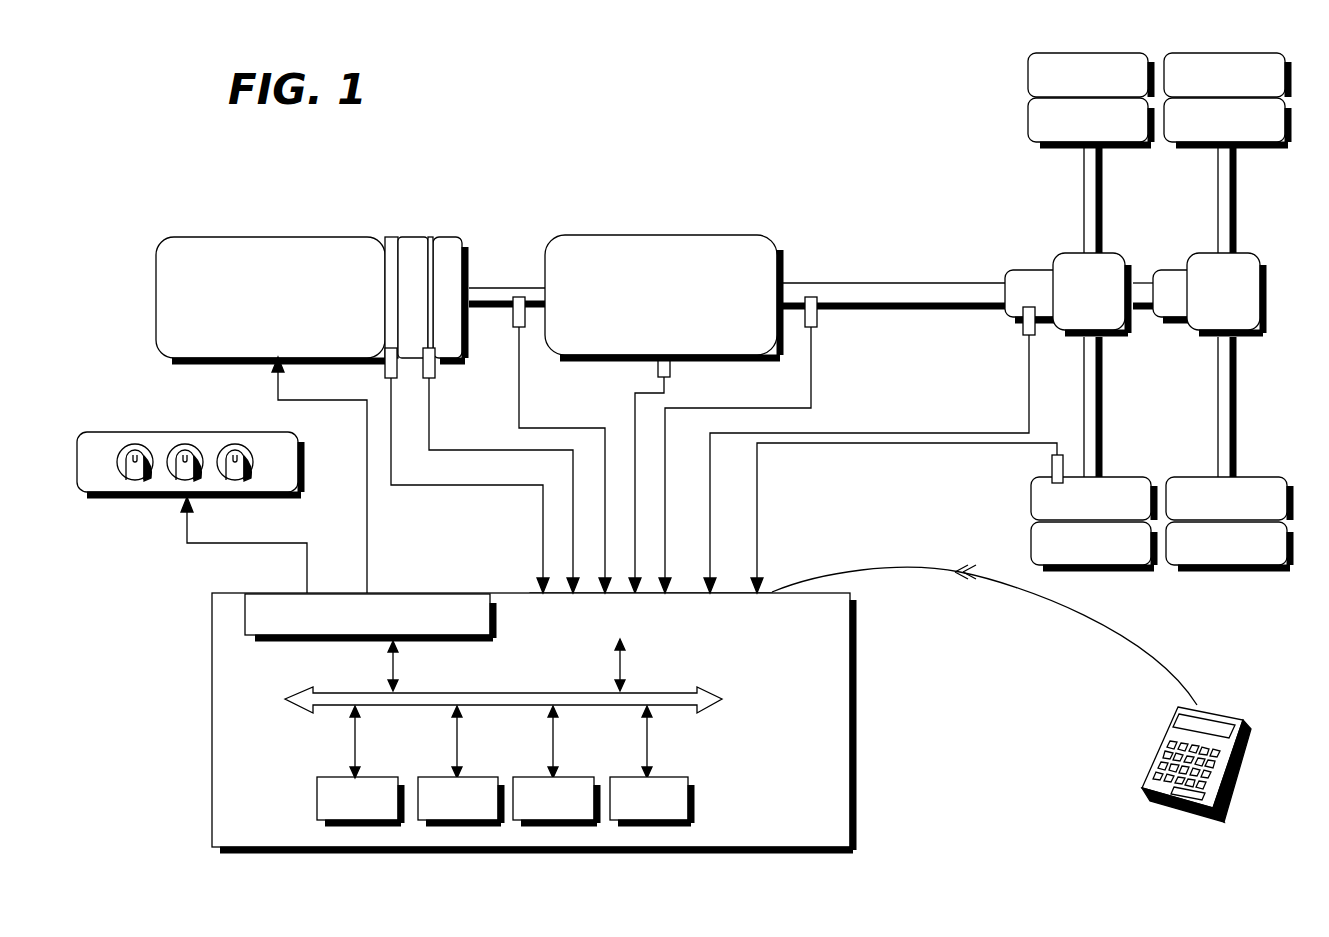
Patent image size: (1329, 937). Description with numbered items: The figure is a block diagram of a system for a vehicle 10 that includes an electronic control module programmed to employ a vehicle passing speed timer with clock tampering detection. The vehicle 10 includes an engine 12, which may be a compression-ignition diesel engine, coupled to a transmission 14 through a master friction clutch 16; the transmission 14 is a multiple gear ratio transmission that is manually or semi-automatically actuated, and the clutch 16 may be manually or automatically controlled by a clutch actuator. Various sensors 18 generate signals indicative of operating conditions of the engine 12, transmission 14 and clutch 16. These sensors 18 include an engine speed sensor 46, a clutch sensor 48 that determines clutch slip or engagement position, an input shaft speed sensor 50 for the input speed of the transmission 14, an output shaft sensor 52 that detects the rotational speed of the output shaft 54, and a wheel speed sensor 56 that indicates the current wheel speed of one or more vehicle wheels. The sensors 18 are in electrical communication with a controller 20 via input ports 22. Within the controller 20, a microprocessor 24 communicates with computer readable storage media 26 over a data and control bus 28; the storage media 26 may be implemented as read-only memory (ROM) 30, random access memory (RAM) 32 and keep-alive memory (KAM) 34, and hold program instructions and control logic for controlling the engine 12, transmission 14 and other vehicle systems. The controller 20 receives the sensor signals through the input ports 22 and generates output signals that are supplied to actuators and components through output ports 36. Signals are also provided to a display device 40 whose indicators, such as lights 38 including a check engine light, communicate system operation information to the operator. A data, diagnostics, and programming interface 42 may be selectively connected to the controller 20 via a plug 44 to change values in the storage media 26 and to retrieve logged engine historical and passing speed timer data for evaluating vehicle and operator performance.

The vehicle 10 is at (770, 128).
The engine 12 is at (228, 237).
The transmission 14 is at (725, 237).
The master friction clutch 16 is at (433, 222).
The sensors 18 is at (391, 237).
The controller 20 is at (414, 237).
The input ports 22 is at (462, 245).
The microprocessor 24 is at (498, 287).
The computer readable storage media 26 is at (492, 835).
The data and control bus 28 is at (522, 690).
The read-only memory (ROM) 30 is at (563, 777).
The random access memory (RAM) 32 is at (695, 800).
The keep-alive memory (KAM) 34 is at (465, 777).
The output ports 36 is at (290, 642).
The lights 38 is at (157, 432).
The display device 40 is at (133, 498).
The data, diagnostics, and programming interface 42 is at (1250, 770).
The plug 44 is at (976, 600).
The engine speed sensor 46 is at (383, 372).
The clutch sensor 48 is at (438, 368).
The input shaft speed sensor 50 is at (516, 328).
The output shaft sensor 52 is at (818, 328).
The output shaft 54 is at (905, 282).
The wheel speed sensor 56 is at (1050, 465).